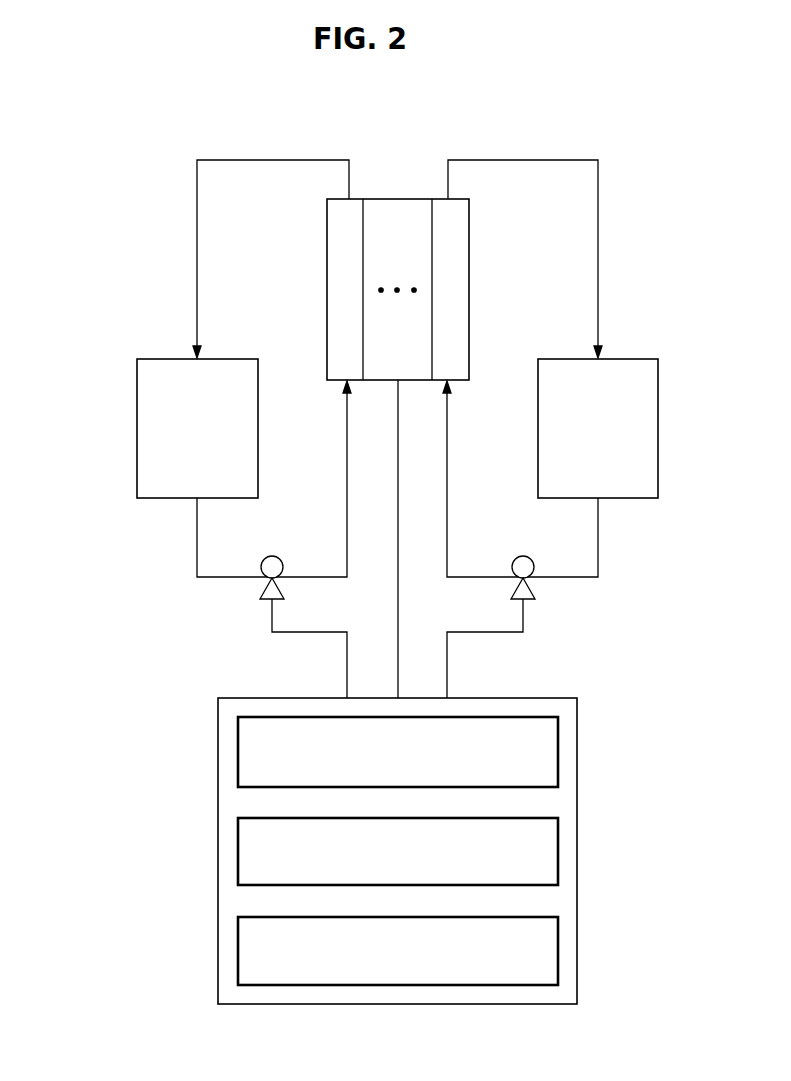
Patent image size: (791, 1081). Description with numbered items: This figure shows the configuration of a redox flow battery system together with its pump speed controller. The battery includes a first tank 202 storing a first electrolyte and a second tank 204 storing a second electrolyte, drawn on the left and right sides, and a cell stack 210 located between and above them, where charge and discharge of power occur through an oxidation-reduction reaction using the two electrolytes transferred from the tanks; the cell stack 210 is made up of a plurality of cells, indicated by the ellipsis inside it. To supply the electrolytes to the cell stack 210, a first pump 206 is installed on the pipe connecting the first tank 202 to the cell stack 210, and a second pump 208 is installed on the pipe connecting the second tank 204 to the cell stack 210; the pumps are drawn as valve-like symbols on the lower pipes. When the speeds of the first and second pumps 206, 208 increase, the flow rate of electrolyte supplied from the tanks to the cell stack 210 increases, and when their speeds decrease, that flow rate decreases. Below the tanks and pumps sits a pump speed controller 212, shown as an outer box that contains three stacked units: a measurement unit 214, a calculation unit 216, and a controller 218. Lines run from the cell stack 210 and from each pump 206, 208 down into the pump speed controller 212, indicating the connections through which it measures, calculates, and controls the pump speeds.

The first tank 202 is at (137, 427).
The second tank 204 is at (658, 428).
The first pump 206 is at (270, 604).
The second pump 208 is at (525, 604).
The cell stack 210 is at (398, 199).
The pump speed controller 212 is at (218, 852).
The measurement unit 214 is at (560, 752).
The calculation unit 216 is at (560, 853).
The controller 218 is at (560, 951).